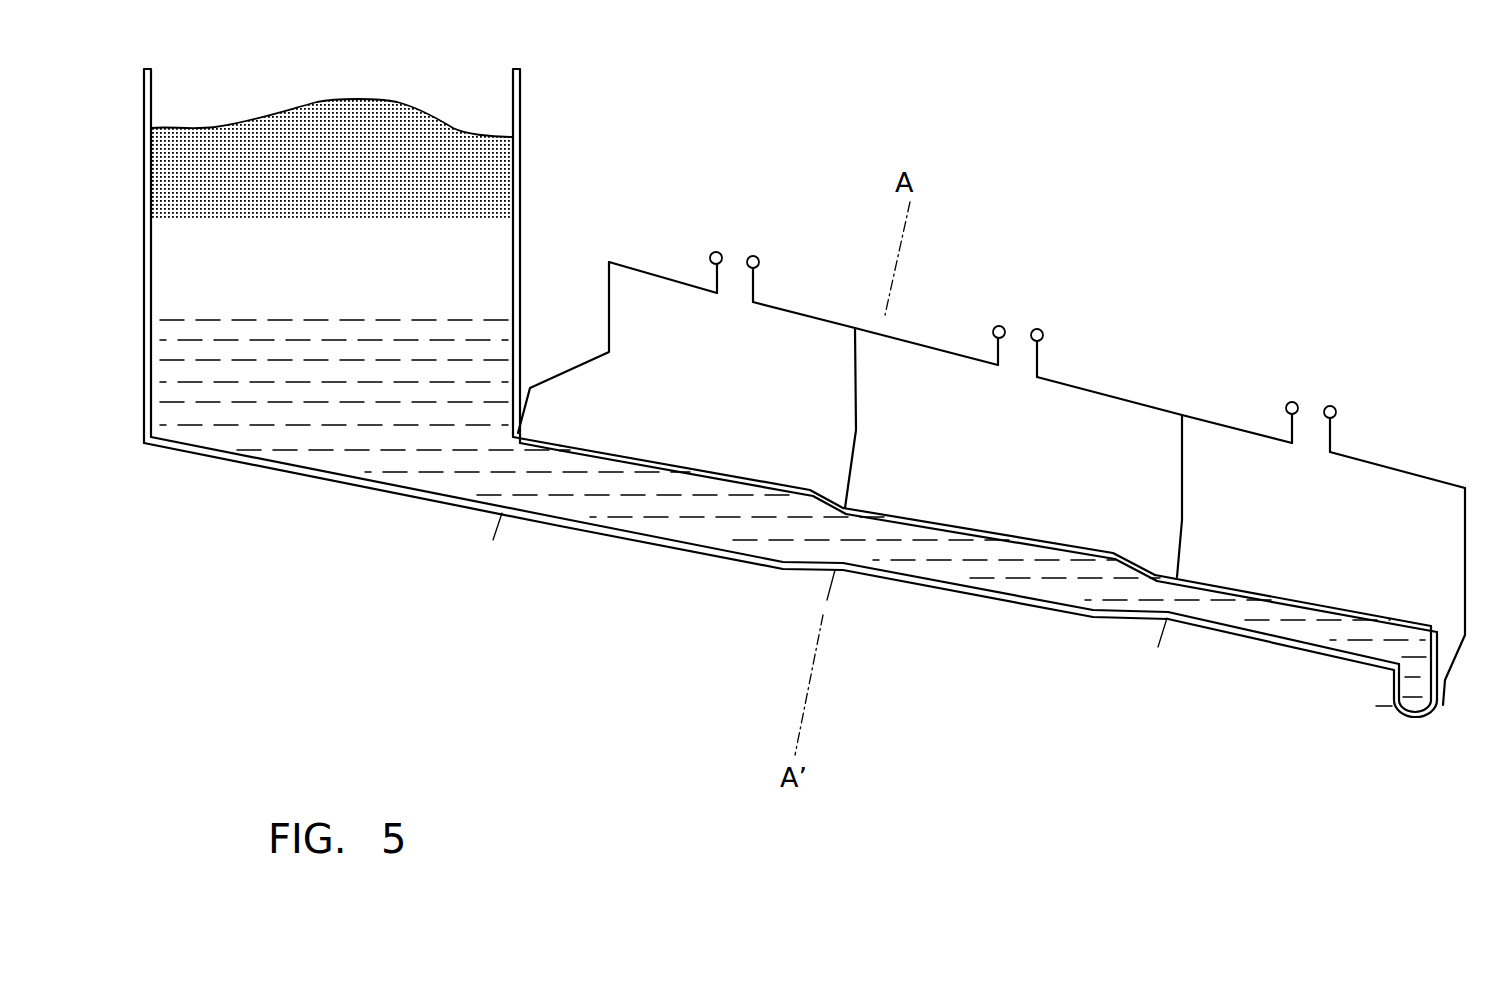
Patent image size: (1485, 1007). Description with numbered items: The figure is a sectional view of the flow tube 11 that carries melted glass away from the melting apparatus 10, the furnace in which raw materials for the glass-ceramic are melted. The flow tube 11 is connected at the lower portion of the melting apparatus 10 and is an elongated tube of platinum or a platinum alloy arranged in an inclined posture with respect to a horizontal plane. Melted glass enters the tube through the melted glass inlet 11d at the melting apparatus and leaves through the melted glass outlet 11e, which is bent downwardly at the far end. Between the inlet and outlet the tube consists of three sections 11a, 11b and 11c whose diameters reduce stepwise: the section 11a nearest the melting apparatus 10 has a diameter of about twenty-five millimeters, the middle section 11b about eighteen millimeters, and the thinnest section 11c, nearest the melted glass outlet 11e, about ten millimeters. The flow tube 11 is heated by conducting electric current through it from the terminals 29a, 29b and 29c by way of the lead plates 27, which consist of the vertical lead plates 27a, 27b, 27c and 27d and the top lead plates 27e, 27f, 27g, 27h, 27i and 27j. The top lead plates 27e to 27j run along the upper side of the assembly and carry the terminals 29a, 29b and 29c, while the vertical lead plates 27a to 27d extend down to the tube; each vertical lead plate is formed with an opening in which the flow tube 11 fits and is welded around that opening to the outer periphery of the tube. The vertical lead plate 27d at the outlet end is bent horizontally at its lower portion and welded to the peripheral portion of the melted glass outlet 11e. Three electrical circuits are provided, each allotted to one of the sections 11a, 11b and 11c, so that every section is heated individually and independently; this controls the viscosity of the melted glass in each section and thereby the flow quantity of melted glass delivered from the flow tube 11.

The melting apparatus 10 is at (523, 158).
The flow tube 11 is at (790, 638).
The section 11a is at (642, 537).
The middle section 11b is at (982, 593).
The thinnest section 11c is at (1280, 640).
The melted glass inlet 11d is at (529, 467).
The melted glass outlet 11e is at (1420, 702).
The lead plates 27 is at (991, 414).
The vertical lead plate 27a is at (610, 330).
The vertical lead plate 27b is at (857, 430).
The vertical lead plate 27c is at (1182, 497).
The vertical lead plate 27d is at (1465, 540).
The top lead plate 27e is at (652, 272).
The top lead plate 27f is at (813, 317).
The top lead plate 27g is at (945, 352).
The top lead plate 27h is at (1103, 390).
The top lead plate 27i is at (1247, 430).
The top lead plate 27j is at (1415, 475).
The terminal 29a is at (716, 252).
The terminal 29b is at (998, 326).
The terminal 29c is at (1292, 402).